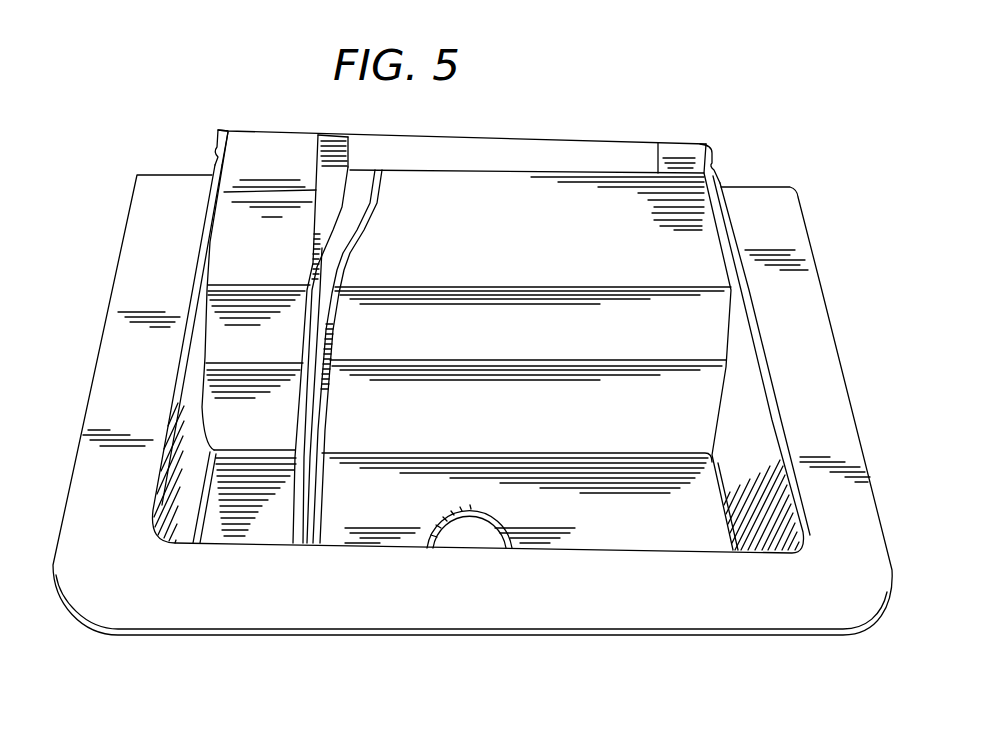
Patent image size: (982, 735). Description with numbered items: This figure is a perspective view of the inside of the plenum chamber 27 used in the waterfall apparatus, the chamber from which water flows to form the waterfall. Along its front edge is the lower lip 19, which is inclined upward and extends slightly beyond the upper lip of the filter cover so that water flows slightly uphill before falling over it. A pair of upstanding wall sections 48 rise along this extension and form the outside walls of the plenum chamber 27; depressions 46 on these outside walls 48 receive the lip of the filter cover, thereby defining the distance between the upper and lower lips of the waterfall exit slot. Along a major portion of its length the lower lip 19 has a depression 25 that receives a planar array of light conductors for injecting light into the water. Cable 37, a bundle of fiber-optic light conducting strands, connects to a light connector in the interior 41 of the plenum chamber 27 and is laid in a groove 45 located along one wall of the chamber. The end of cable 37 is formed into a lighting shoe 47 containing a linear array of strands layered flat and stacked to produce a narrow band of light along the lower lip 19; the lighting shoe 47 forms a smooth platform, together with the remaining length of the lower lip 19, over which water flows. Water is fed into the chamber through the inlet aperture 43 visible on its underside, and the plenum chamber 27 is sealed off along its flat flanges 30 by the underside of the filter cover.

The lower lip 19 is at (277, 139).
The depression 25 is at (477, 136).
The plenum chamber 27 is at (772, 186).
The flat flanges 30 is at (132, 297).
The cable 37 is at (320, 500).
The interior 41 is at (712, 455).
The inlet aperture 43 is at (508, 540).
The groove 45 is at (310, 249).
The depressions 46 is at (213, 147).
The lighting shoe 47 is at (557, 143).
The upstanding wall sections 48 is at (212, 212).